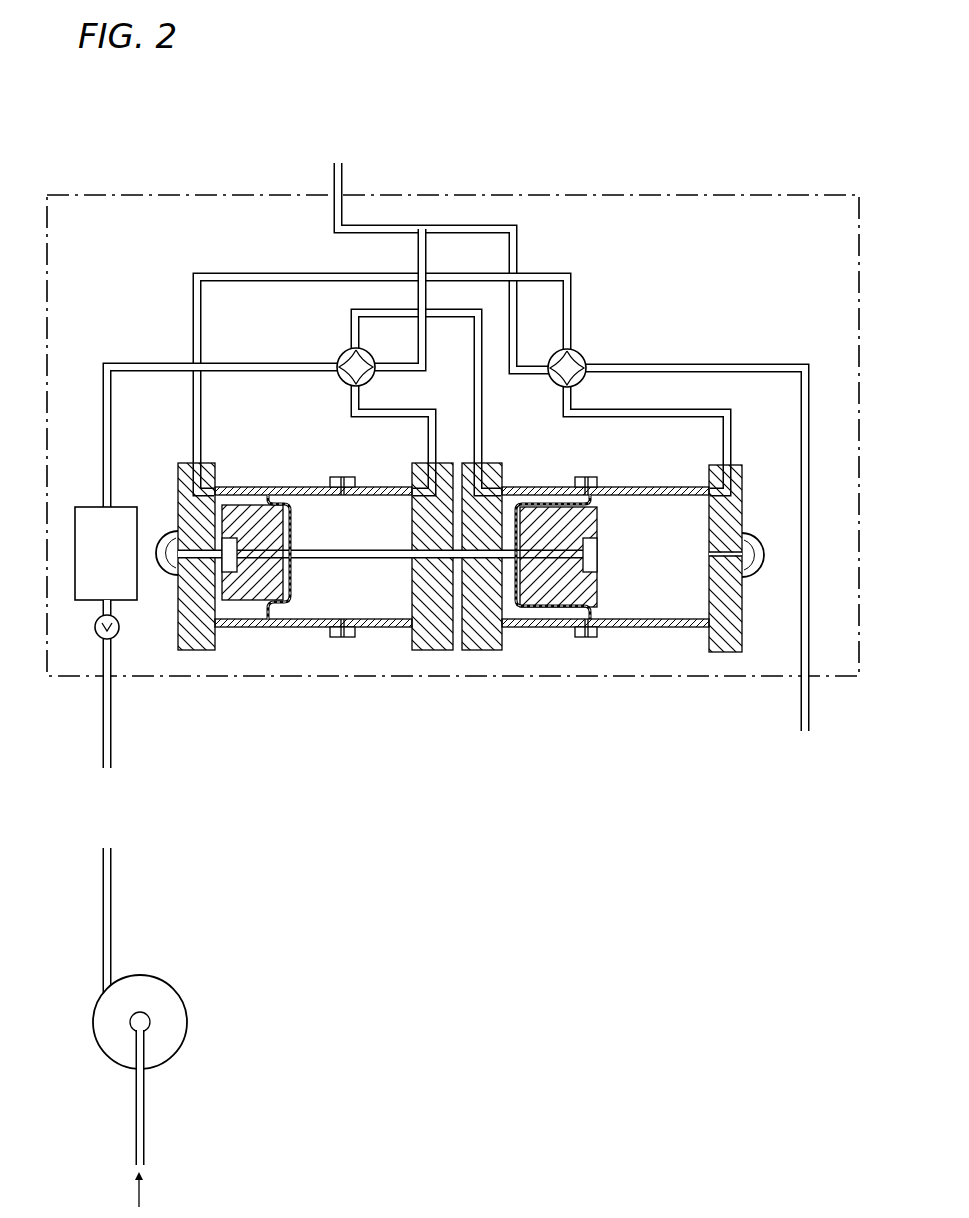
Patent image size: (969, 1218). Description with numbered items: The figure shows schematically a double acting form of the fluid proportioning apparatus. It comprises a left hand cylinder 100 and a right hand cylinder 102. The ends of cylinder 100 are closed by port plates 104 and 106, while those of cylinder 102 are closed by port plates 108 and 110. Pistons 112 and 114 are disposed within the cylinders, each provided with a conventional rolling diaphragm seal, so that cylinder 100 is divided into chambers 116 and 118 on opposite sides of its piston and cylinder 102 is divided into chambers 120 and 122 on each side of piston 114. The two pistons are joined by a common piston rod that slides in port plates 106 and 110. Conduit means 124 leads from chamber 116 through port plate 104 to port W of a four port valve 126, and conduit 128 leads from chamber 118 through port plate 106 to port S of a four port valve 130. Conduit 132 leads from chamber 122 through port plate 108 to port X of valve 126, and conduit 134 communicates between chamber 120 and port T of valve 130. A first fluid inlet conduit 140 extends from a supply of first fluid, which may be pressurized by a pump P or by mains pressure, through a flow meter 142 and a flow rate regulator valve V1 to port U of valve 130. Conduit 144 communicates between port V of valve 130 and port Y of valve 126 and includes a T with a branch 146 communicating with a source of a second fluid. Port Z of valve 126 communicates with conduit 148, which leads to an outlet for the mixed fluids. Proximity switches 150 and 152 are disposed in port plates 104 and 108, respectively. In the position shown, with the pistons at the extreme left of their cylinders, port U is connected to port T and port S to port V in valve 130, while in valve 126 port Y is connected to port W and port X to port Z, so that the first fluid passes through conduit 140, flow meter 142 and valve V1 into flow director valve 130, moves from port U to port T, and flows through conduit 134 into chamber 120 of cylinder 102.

The left hand cylinder 100 is at (295, 628).
The right hand cylinder 102 is at (650, 626).
The port plate 104 is at (205, 649).
The port plate 106 is at (418, 649).
The port plate 108 is at (716, 650).
The port plate 110 is at (491, 651).
The piston 112 is at (256, 514).
The piston 114 is at (548, 515).
The chamber 116 is at (233, 499).
The chamber 118 is at (337, 537).
The chamber 120 is at (513, 500).
The chamber 122 is at (647, 536).
The conduit means 124 is at (192, 290).
The four port valve 126 is at (591, 355).
The conduit 128 is at (388, 418).
The four port valve 130 is at (336, 385).
The conduit 132 is at (732, 416).
The conduit 134 is at (456, 313).
The first fluid inlet conduit 140 is at (111, 407).
The flow meter 142 is at (92, 506).
The conduit 144 is at (418, 247).
The branch 146 is at (337, 125).
The conduit 148 is at (760, 361).
The proximity switch 150 is at (160, 533).
The proximity switch 152 is at (752, 536).
The flow rate regulator valve V1 is at (95, 631).
The pump P is at (170, 1001).
The port T is at (349, 352).
The port U is at (338, 360).
The port V is at (374, 358).
The port S is at (370, 380).
The port W is at (579, 355).
The port X is at (558, 382).
The port Y is at (559, 353).
The port Z is at (580, 380).